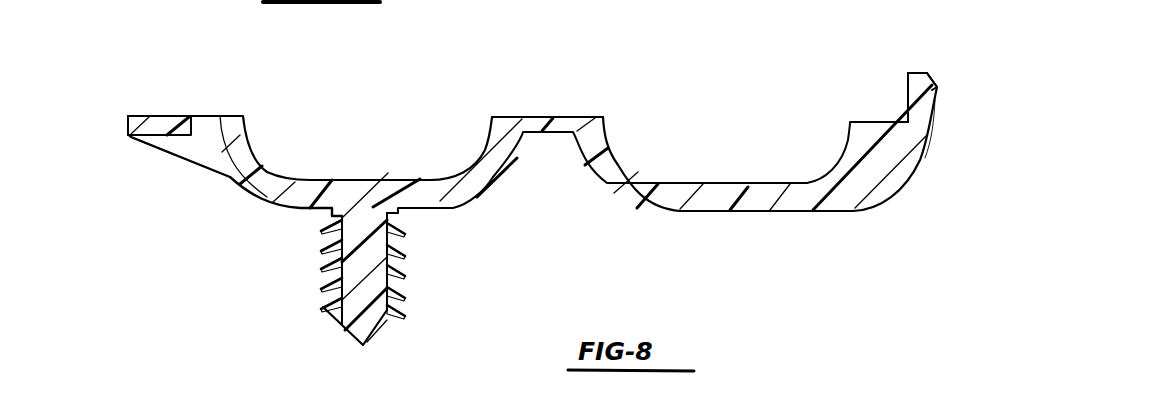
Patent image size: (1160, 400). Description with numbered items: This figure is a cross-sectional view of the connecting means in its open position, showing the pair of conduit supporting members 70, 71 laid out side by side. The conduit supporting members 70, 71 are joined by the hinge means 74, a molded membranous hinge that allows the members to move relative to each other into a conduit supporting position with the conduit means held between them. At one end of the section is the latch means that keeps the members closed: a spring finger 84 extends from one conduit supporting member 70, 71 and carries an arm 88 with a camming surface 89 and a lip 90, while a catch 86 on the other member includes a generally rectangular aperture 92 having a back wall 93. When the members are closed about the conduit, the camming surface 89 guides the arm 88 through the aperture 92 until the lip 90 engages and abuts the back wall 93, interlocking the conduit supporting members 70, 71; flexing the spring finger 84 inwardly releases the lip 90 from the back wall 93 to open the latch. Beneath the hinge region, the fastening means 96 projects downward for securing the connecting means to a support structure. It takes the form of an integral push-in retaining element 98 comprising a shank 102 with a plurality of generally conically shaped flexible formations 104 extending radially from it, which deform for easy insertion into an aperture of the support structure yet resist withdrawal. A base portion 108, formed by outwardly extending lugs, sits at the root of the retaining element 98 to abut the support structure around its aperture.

The conduit supporting member 70 is at (510, 167).
The conduit supporting member 71 is at (775, 213).
The hinge means 74 is at (518, 112).
The spring finger 84 is at (887, 185).
The catch 86 is at (217, 172).
The arm 88 is at (907, 93).
The camming surface 89 is at (932, 78).
The lip 90 is at (940, 108).
The aperture 92 is at (203, 123).
The back wall 93 is at (170, 138).
The fastening means 96 is at (330, 327).
The push-in retaining element 98 is at (383, 332).
The shank 102 is at (377, 243).
The conically shaped flexible formations 104 is at (390, 292).
The base portion 108 is at (320, 213).